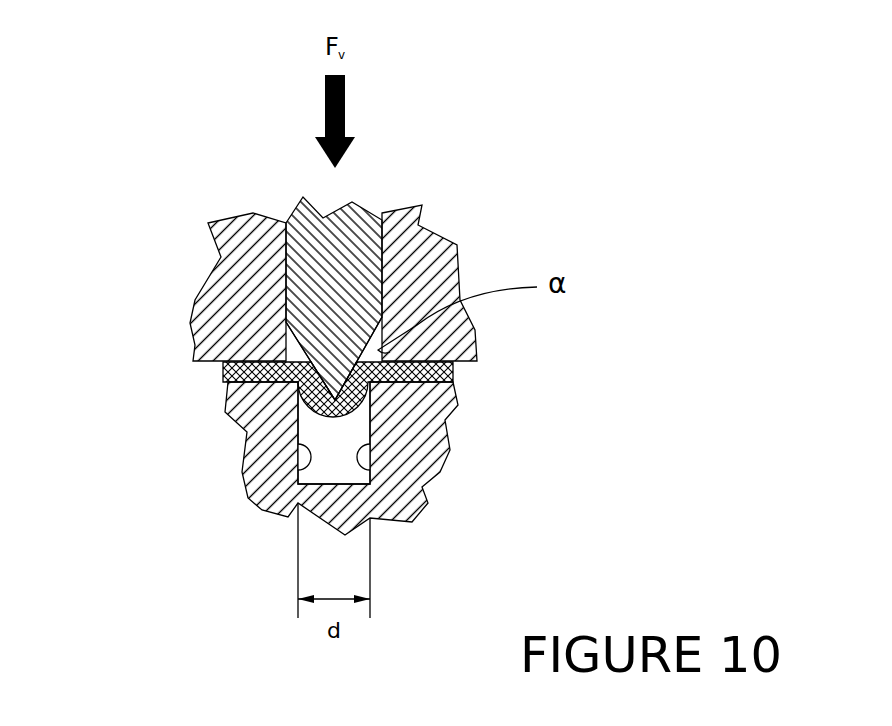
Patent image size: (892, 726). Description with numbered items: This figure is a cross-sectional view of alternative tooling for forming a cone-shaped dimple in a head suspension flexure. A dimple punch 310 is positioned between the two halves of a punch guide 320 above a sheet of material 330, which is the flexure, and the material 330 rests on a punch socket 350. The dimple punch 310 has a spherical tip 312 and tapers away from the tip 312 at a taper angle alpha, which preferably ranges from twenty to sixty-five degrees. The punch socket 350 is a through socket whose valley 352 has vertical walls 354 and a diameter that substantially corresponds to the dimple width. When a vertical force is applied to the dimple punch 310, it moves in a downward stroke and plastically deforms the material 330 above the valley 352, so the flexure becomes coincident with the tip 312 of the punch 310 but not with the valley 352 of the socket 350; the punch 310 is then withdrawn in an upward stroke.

The dimple punch 310 is at (367, 222).
The tip 312 is at (335, 400).
The punch guide 320 is at (230, 237).
The sheet of material 330 is at (453, 373).
The punch socket 350 is at (428, 452).
The valley 352 is at (342, 472).
The vertical walls 354 is at (298, 471).